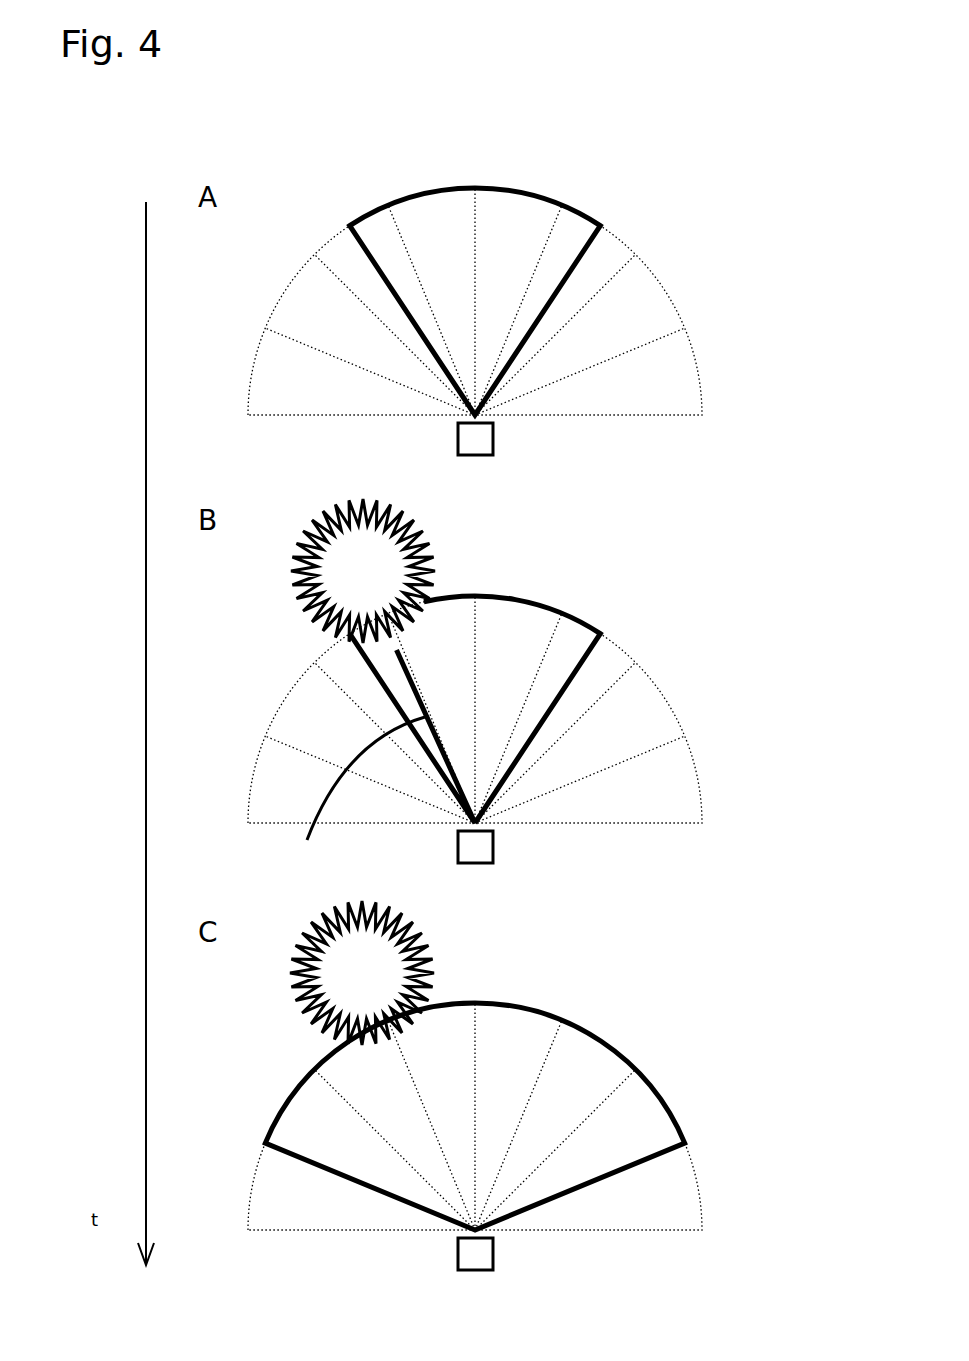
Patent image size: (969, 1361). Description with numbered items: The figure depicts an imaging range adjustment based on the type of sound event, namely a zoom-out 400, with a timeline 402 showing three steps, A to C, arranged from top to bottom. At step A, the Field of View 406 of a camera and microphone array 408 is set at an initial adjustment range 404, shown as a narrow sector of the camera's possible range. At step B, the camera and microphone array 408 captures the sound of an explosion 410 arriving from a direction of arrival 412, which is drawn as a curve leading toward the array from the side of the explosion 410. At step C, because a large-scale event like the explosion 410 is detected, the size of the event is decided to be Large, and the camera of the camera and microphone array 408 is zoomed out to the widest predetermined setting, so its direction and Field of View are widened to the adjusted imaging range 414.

The imaging range adjustment based on the type of sound event (zoom-out) 400 is at (775, 195).
The timeline 402 is at (146, 280).
The initial adjustment range 404 is at (391, 192).
The Field of View 406 is at (478, 301).
The camera and microphone array 408 is at (493, 437).
The explosion 410 is at (432, 563).
The direction of arrival 412 is at (355, 797).
The adjusted imaging range 414 is at (588, 1034).